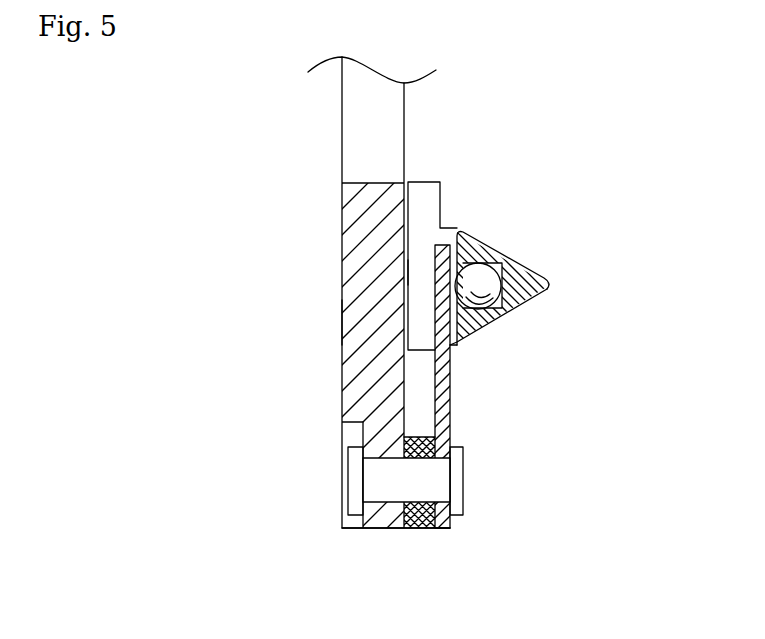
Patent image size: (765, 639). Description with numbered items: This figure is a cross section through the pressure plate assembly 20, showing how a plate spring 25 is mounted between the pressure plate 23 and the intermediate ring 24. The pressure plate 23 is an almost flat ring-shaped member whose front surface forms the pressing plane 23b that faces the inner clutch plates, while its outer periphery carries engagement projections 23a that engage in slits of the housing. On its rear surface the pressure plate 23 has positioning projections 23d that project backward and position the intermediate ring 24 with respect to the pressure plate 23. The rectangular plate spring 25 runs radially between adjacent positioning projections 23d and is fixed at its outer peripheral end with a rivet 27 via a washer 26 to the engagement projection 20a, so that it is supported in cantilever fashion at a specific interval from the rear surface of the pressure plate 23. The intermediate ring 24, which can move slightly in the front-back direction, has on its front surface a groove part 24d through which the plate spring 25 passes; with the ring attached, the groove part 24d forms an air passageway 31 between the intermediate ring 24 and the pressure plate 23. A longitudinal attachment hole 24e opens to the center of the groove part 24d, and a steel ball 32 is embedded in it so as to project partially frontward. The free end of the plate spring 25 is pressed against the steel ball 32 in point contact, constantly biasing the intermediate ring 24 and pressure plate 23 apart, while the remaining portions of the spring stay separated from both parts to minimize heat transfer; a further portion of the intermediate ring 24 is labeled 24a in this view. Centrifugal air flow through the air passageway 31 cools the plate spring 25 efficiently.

The pressure plate assembly 20 is at (630, 142).
The engagement projection 20a is at (475, 547).
The pressure plate 23 is at (313, 212).
The engagement projection 23a is at (380, 523).
The pressing plane 23b is at (342, 322).
The positioning projection 23d is at (430, 378).
The intermediate ring 24 is at (557, 265).
The latch tip 24a is at (530, 298).
The groove part 24d is at (454, 230).
The attachment hole 24e is at (472, 302).
The plate spring 25 is at (452, 418).
The washer 26 is at (419, 523).
The rivet 27 is at (373, 482).
The air passageway 31 is at (415, 272).
The steel ball 32 is at (488, 304).